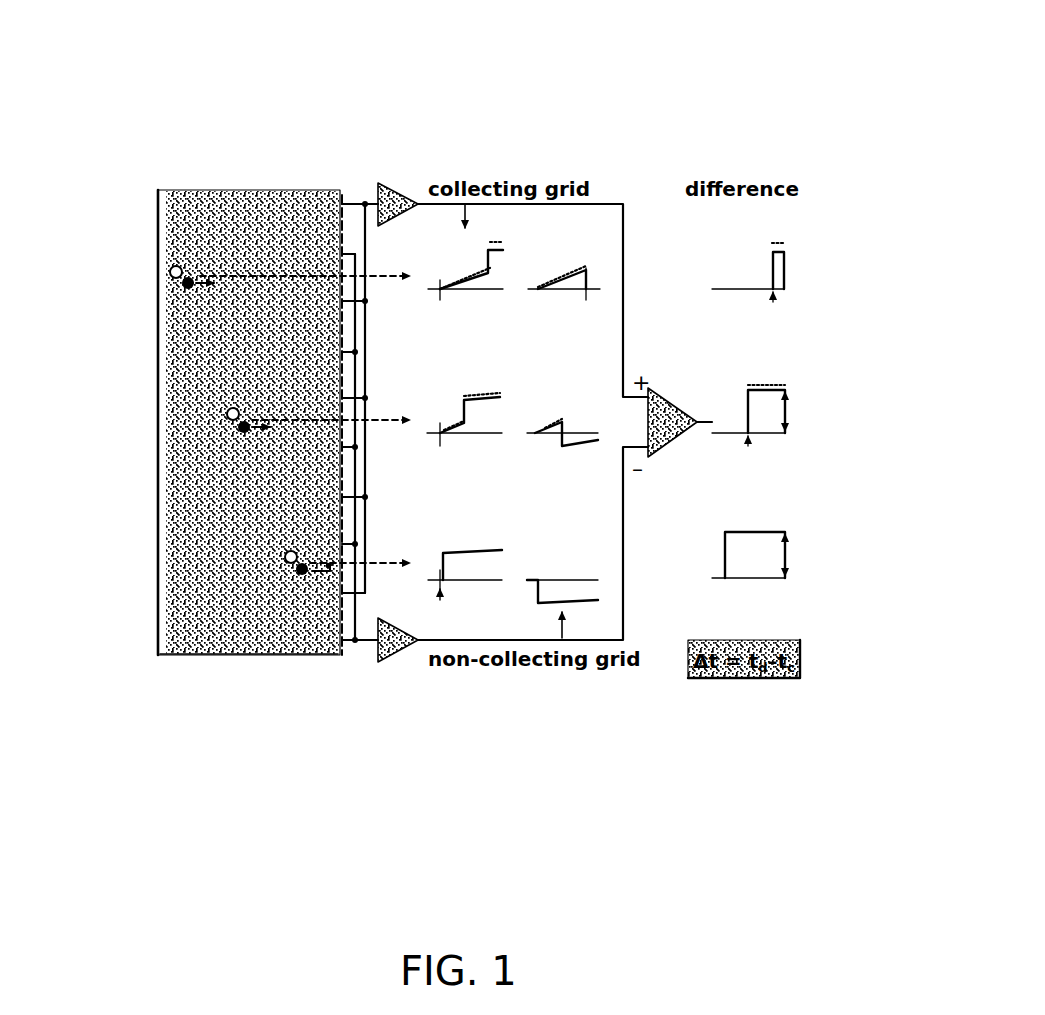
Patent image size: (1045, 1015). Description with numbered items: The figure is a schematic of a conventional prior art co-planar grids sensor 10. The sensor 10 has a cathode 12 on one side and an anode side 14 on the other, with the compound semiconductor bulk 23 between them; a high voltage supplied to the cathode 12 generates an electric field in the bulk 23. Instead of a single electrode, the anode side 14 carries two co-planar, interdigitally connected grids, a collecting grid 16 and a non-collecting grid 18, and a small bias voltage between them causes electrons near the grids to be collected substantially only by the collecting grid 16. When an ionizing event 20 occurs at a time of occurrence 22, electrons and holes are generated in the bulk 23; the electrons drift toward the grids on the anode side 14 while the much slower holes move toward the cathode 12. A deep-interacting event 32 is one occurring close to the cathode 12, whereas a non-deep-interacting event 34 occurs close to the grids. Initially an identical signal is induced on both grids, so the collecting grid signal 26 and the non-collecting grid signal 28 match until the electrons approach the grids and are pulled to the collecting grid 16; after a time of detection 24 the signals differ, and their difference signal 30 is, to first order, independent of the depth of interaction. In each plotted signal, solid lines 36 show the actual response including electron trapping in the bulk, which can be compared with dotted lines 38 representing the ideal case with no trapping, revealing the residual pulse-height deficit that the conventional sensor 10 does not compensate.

The co-planar grids sensor 10 is at (210, 168).
The cathode 12 is at (156, 207).
The anode side 14 is at (347, 197).
The collecting grid 16 is at (333, 207).
The non-collecting grid 18 is at (338, 637).
The ionizing event 20 is at (290, 563).
The time of occurrence 22 is at (440, 288).
The compound semiconductor bulk 23 is at (210, 613).
The time of detection 24 is at (775, 325).
The collecting grid signal 26 is at (490, 250).
The non-collecting grid signal 28 is at (563, 672).
The difference signal 30 is at (795, 212).
The deep-interacting event 32 is at (165, 277).
The non-deep-interacting event 34 is at (303, 578).
The solid lines 36 is at (503, 250).
The dotted lines 38 is at (277, 270).